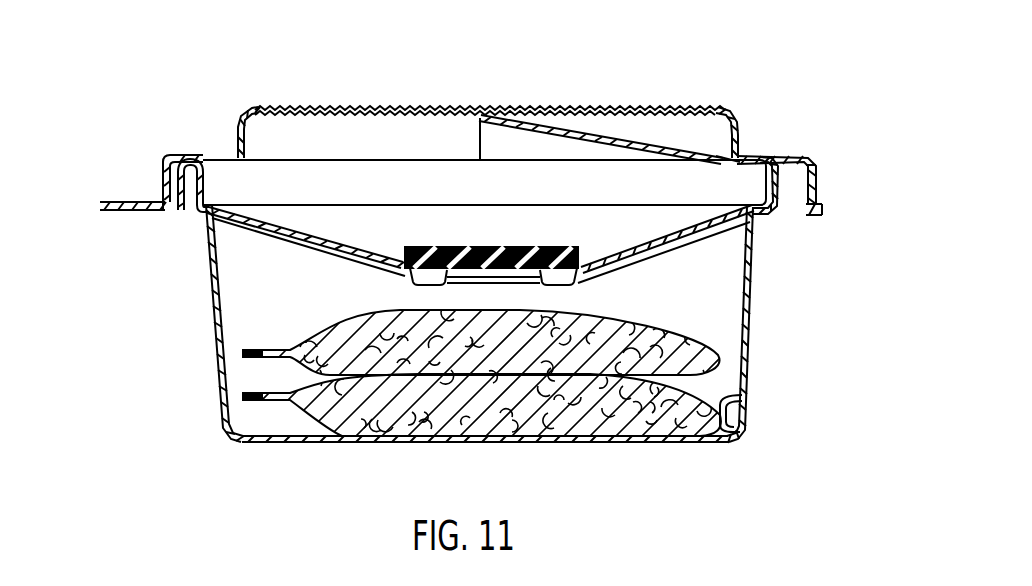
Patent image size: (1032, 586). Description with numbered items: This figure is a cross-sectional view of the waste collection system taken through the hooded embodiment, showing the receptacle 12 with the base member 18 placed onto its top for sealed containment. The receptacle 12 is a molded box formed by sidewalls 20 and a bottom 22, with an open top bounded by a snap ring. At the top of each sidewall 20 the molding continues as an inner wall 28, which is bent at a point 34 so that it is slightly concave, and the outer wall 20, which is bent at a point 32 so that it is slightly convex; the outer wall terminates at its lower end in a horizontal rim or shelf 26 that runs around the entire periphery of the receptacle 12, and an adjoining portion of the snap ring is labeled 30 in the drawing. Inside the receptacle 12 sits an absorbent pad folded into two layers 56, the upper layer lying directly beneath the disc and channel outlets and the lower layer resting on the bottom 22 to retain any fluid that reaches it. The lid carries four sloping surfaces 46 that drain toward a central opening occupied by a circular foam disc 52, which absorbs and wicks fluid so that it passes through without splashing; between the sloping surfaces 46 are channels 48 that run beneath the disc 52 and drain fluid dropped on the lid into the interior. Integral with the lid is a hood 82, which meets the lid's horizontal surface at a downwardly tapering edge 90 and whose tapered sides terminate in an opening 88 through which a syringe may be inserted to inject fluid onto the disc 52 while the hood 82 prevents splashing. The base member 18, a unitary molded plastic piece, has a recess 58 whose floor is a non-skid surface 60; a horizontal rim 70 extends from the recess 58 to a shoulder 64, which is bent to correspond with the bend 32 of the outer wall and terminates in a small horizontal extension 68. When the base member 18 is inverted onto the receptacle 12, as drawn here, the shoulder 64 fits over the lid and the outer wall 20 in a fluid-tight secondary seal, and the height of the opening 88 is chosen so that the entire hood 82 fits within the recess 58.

The receptacle 12 is at (482, 310).
The base member 18 is at (530, 118).
The sidewall 20 is at (217, 328).
The bottom 22 is at (295, 444).
The horizontal rim or shelf 26 is at (125, 212).
The inner wall 28 is at (190, 212).
The hook 30 is at (162, 197).
The bend point 32 is at (198, 183).
The bend point 34 is at (202, 190).
The sloping surface 46 is at (480, 227).
The channel 48 is at (347, 240).
The circular disc 52 is at (505, 246).
The layers 56 is at (635, 310).
The recess 58 is at (517, 94).
The non-skid surface 60 is at (550, 107).
The shoulder 64 is at (800, 165).
The horizontal extension 68 is at (818, 201).
The horizontal rim 70 is at (776, 152).
The hood 82 is at (561, 159).
The opening 88 is at (478, 142).
The downwardly tapering edge 90 is at (702, 163).